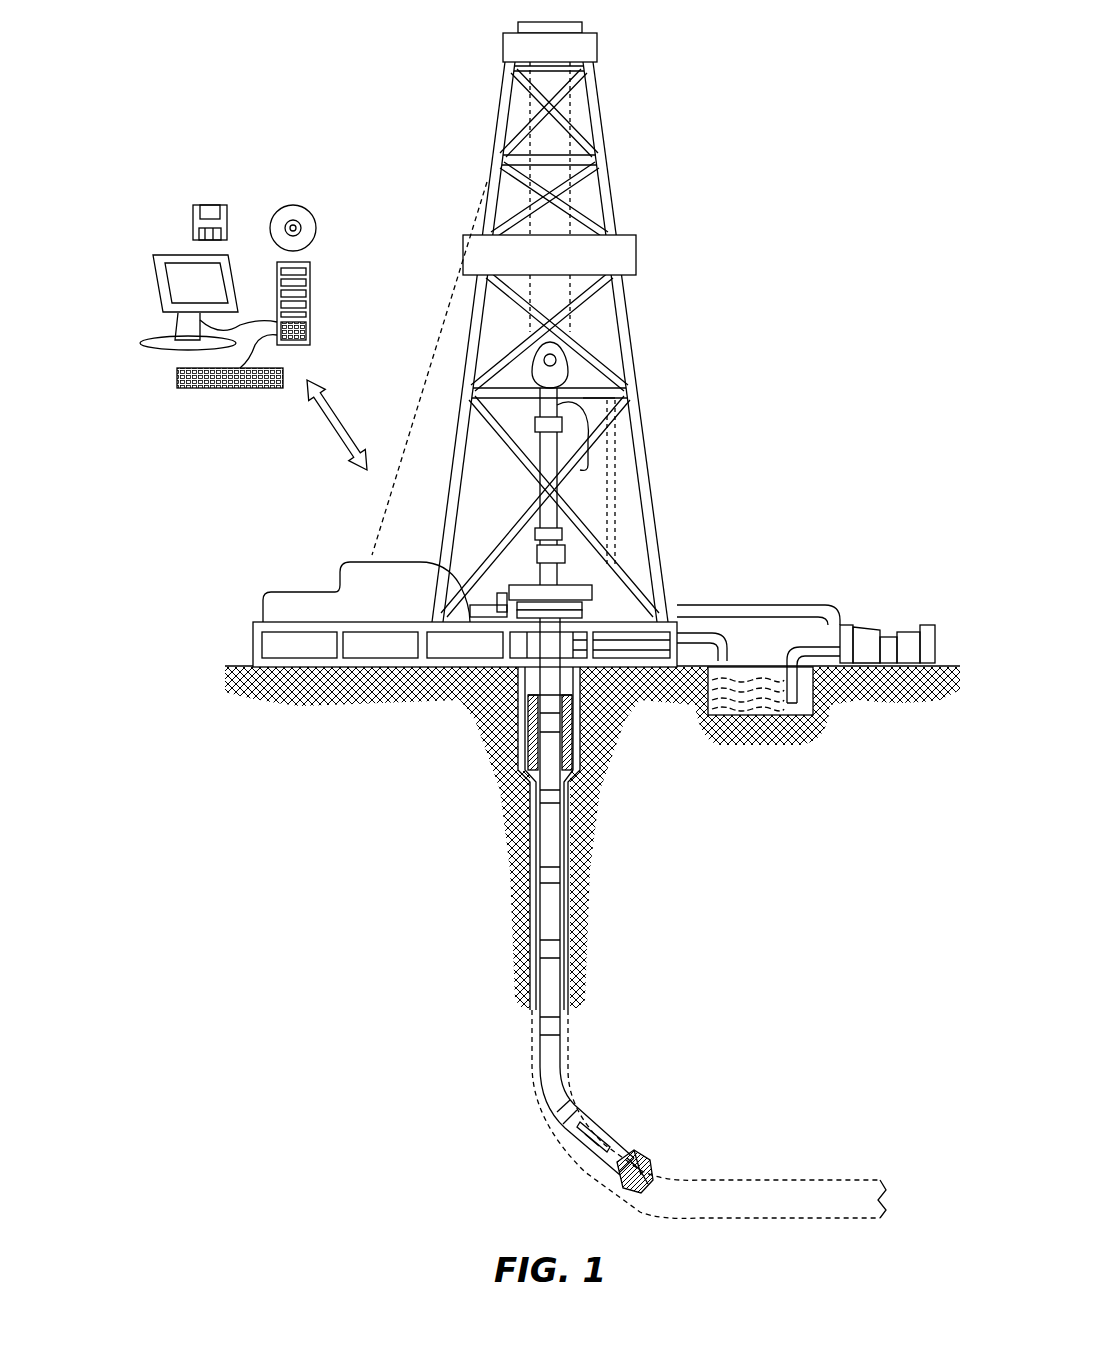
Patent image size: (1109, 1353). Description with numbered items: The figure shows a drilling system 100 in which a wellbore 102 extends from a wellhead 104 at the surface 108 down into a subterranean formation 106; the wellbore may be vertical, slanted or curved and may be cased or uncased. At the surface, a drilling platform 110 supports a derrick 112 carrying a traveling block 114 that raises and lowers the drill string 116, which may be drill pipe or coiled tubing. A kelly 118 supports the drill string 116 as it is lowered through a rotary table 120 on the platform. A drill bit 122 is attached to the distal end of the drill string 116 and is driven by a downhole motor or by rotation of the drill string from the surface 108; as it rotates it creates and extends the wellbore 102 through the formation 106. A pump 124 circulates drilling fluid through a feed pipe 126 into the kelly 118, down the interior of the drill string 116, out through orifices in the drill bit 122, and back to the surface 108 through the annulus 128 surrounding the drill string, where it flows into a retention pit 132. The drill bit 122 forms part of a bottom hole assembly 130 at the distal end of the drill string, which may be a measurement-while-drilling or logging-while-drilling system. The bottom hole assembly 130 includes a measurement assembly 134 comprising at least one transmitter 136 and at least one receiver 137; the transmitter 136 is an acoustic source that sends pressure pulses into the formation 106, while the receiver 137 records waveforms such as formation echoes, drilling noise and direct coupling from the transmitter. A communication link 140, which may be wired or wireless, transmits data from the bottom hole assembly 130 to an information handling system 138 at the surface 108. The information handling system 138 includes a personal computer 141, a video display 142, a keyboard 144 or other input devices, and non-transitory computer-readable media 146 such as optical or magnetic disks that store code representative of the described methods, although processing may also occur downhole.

The drilling system 100 is at (872, 122).
The wellbore 102 is at (570, 868).
The wellhead 104 is at (595, 610).
The subterranean formation 106 is at (757, 959).
The surface 108 is at (945, 665).
The drilling platform 110 is at (253, 652).
The derrick 112 is at (607, 172).
The traveling block 114 is at (575, 370).
The drill string 116 is at (565, 852).
The kelly 118 is at (550, 448).
The rotary table 120 is at (587, 585).
The drill bit 122 is at (652, 1165).
The pump 124 is at (868, 625).
The feed pipe 126 is at (785, 605).
The annulus 128 is at (530, 868).
The bottom hole assembly 130 is at (562, 1133).
The retention pit 132 is at (755, 700).
The measurement assembly 134 is at (594, 1102).
The transmitter 136 is at (605, 1135).
The receiver 137 is at (585, 1142).
The information handling system 138 is at (223, 299).
The communication link 140 is at (312, 430).
The personal computer 141 is at (312, 275).
The video display 142 is at (155, 292).
The keyboard 144 is at (185, 390).
The non-transitory computer-readable media 146 is at (290, 205).